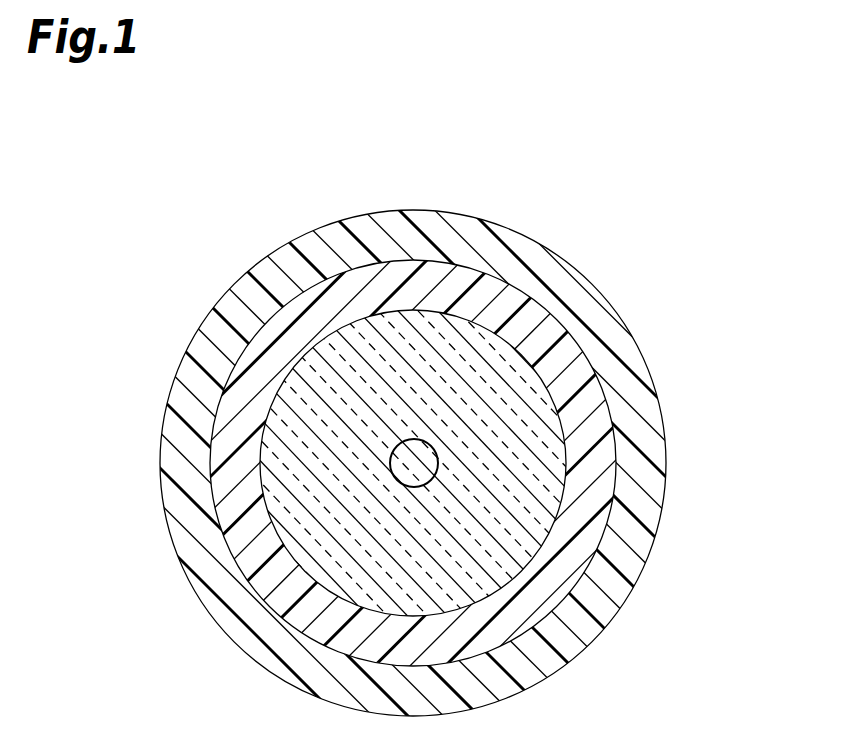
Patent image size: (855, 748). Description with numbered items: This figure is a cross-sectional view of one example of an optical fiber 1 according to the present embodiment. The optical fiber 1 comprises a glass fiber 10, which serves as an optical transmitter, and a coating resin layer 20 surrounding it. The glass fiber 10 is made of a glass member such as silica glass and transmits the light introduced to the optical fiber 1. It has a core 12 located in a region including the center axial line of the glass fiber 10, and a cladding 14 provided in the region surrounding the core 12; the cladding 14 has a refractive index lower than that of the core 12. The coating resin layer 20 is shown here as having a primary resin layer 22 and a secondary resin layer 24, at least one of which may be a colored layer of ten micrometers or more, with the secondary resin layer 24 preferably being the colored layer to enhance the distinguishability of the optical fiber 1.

The optical fiber 1 is at (512, 141).
The glass fiber 10 is at (638, 201).
The core 12 is at (423, 453).
The cladding 14 is at (535, 437).
The coating resin layer 20 is at (758, 479).
The primary resin layer 22 is at (607, 483).
The secondary resin layer 24 is at (643, 548).